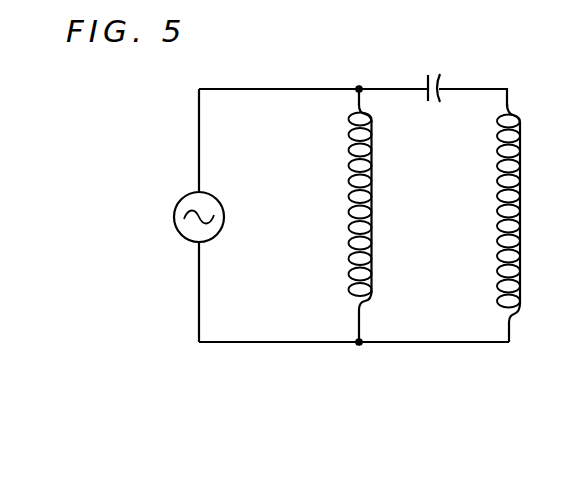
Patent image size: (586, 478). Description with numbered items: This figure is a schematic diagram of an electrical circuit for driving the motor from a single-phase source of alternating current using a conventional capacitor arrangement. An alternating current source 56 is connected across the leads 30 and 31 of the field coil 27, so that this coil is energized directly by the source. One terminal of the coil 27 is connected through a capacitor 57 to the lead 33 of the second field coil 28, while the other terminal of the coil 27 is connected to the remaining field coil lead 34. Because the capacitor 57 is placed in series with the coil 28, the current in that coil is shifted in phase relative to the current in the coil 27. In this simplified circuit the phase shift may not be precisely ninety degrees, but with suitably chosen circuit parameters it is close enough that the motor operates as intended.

The field coil 27 is at (347, 127).
The field coil 28 is at (522, 163).
The lead 30 is at (289, 86).
The lead 31 is at (270, 343).
The lead 33 is at (489, 86).
The field coil lead 34 is at (465, 343).
The alternating current source 56 is at (178, 202).
The capacitor 57 is at (437, 72).